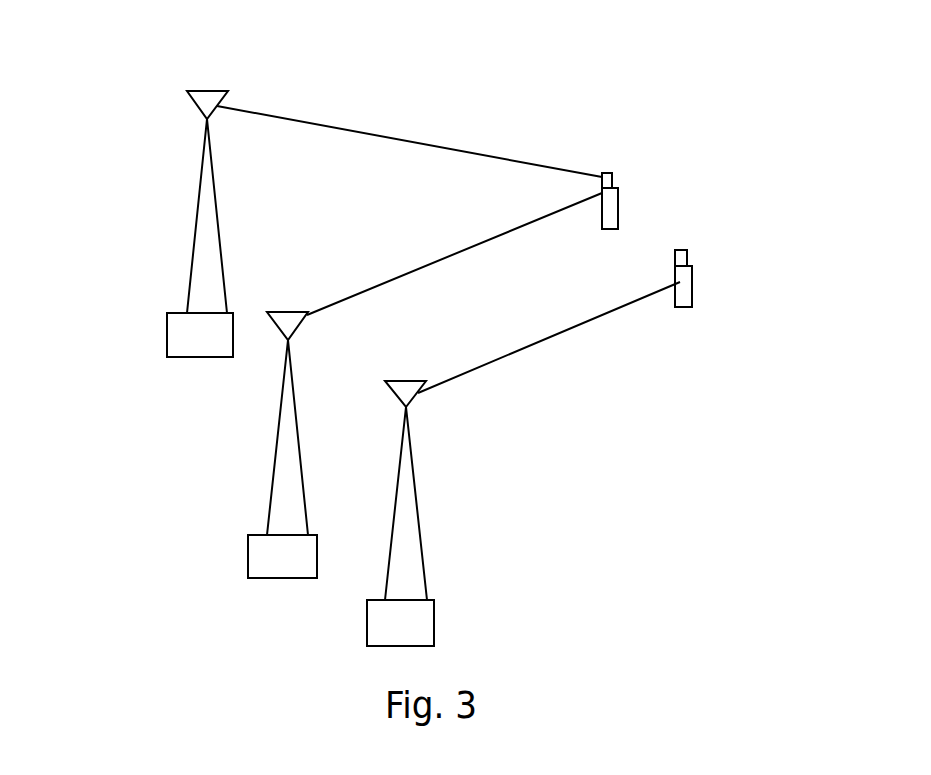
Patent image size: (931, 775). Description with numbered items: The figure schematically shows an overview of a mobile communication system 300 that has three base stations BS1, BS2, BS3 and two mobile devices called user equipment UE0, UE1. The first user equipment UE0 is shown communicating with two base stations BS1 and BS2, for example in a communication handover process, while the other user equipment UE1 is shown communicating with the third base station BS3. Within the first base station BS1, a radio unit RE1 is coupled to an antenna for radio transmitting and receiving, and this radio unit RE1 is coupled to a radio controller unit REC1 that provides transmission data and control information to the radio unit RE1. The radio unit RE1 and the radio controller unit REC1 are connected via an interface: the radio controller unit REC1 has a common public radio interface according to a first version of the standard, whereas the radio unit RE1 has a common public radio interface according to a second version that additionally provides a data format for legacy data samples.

The mobile communication system 300 is at (763, 46).
The radio unit RE1 is at (207, 90).
The first base station BS1 is at (208, 217).
The radio controller unit REC1 is at (167, 335).
The second base station BS2 is at (285, 437).
The third base station BS3 is at (418, 513).
The first user equipment UE0 is at (615, 217).
The second user equipment UE1 is at (688, 293).